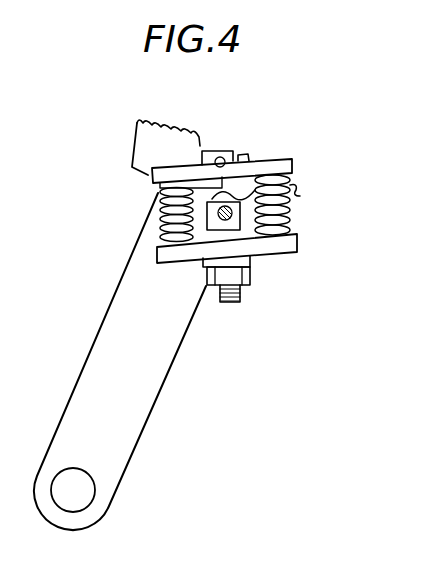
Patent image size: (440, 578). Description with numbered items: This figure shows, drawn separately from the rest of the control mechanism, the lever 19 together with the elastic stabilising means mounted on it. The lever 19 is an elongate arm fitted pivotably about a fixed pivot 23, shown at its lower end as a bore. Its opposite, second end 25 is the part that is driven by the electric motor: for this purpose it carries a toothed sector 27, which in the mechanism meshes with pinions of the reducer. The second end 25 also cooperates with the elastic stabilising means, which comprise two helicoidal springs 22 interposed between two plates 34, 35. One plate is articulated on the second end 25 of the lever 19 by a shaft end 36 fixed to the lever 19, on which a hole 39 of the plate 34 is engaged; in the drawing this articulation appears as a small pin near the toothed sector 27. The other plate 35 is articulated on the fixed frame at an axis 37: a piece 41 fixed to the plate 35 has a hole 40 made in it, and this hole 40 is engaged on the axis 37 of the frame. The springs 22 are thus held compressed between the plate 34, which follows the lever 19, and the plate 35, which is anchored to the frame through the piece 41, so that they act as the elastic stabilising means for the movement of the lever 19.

The lever 19 is at (100, 372).
The helicoidal springs 22 is at (160, 200).
The fixed pivot 23 is at (58, 483).
The second end of the lever 25 is at (143, 129).
The toothed sector 27 is at (150, 124).
The plate 34 is at (292, 160).
The plate 35 is at (297, 243).
The shaft end 36 is at (224, 158).
The axis 37 is at (205, 212).
The hole 39 is at (228, 158).
The hole 40 is at (226, 228).
The piece 41 is at (244, 222).